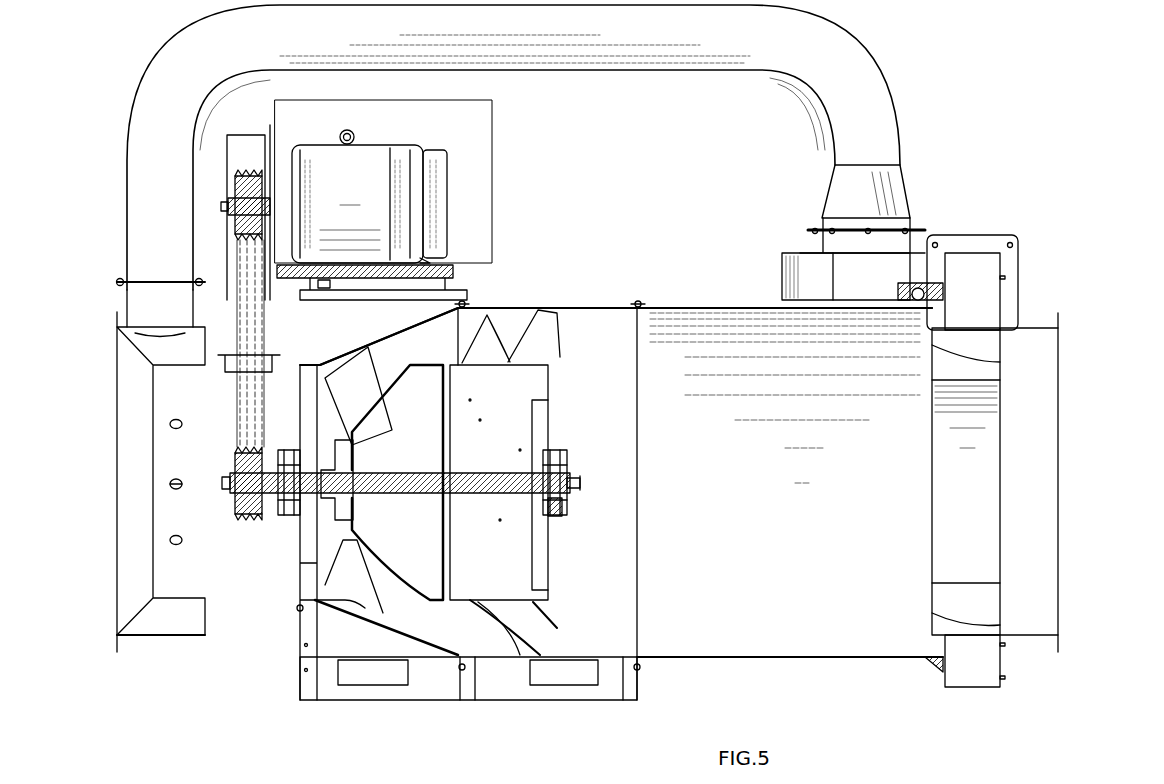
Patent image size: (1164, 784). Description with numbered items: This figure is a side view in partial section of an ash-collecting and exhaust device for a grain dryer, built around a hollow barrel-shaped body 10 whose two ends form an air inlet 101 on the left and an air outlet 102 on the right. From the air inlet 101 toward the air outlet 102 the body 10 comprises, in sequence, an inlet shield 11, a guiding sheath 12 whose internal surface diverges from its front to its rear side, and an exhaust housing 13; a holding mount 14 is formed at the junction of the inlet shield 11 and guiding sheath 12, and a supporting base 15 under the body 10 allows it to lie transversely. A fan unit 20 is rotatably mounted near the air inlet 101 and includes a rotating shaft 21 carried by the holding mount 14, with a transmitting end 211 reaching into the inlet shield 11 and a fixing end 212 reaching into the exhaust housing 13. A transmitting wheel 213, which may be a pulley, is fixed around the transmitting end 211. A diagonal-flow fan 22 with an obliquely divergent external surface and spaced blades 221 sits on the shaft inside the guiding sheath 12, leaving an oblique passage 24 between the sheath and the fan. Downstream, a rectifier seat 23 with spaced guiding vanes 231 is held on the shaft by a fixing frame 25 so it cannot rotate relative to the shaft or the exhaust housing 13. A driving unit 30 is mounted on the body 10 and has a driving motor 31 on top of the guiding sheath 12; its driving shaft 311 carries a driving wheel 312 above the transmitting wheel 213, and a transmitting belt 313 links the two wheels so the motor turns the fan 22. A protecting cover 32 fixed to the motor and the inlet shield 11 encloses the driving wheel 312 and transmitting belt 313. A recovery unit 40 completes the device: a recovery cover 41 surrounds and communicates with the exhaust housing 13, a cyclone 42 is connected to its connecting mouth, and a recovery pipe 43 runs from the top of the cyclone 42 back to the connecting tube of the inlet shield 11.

The body 10 is at (590, 262).
The inlet shield 11 is at (165, 640).
The guiding sheath 12 is at (432, 306).
The exhaust housing 13 is at (728, 302).
The holding mount 14 is at (285, 508).
The supporting base 15 is at (422, 683).
The fan unit 20 is at (592, 388).
The rotating shaft 21 is at (462, 470).
The fan 22 is at (418, 362).
The rectifier seat 23 is at (552, 596).
The oblique passage 24 is at (330, 605).
The fixing frame 25 is at (565, 508).
The driving unit 30 is at (508, 128).
The driving motor 31 is at (448, 196).
The protecting cover 32 is at (247, 127).
The recovery unit 40 is at (995, 165).
The recovery cover 41 is at (1000, 658).
The cyclone 42 is at (805, 268).
The recovery pipe 43 is at (870, 120).
The air inlet 101 is at (117, 470).
The air outlet 102 is at (1058, 460).
The transmitting end 211 is at (235, 475).
The fixing end 212 is at (565, 478).
The transmitting wheel 213 is at (237, 506).
The blades 221 is at (355, 405).
The guiding vanes 231 is at (512, 635).
The driving shaft 311 is at (264, 207).
The driving wheel 312 is at (250, 190).
The transmitting belt 313 is at (240, 265).